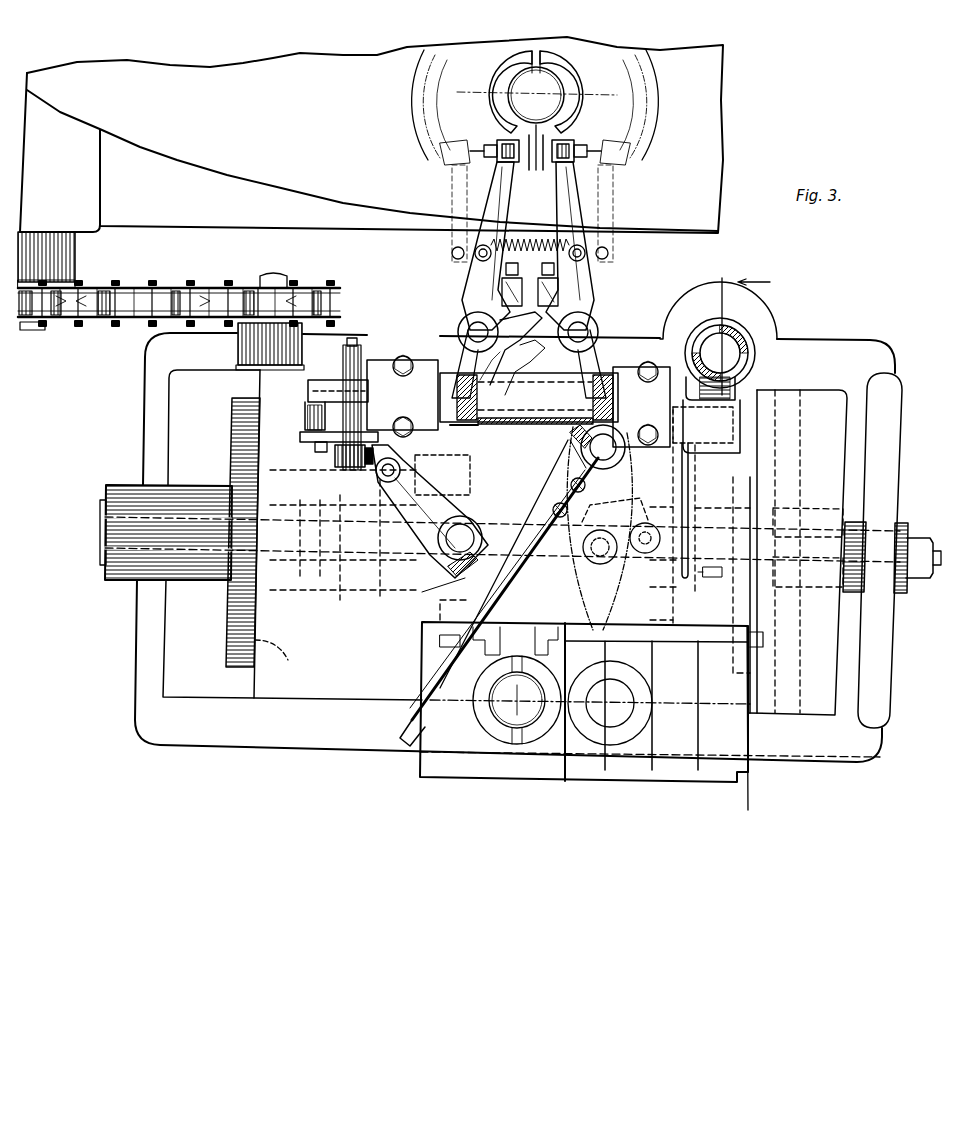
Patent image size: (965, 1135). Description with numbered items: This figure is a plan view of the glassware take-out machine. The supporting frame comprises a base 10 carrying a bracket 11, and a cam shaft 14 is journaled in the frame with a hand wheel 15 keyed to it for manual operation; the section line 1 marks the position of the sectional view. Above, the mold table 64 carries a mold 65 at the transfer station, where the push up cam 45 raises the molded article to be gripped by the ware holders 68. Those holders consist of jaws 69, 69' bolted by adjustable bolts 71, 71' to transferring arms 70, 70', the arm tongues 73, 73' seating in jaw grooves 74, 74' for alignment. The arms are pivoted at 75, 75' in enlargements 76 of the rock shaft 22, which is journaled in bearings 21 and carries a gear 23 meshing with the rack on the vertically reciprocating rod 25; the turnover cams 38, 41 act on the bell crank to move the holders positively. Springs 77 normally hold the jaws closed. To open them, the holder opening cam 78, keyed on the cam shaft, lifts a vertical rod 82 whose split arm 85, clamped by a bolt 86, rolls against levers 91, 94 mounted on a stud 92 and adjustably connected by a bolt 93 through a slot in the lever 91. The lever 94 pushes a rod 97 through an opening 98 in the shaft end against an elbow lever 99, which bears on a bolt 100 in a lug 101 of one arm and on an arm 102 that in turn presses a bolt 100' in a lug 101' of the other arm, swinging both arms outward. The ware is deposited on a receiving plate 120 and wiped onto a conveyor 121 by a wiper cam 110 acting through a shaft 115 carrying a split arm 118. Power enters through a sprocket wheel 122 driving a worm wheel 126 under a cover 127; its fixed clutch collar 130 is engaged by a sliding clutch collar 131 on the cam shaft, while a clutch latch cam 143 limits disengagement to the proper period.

The section line 1 is at (746, 542).
The base 10 is at (144, 350).
The bracket 11 is at (265, 387).
The cam shaft 14 is at (104, 518).
The hand wheel 15 is at (890, 498).
The bearings 21 is at (378, 358).
The rock shaft 22 is at (390, 356).
The gear 23 is at (740, 378).
The vertically reciprocating rod 25 is at (730, 345).
The turnover cam 38 is at (688, 618).
The turnover cam 41 is at (733, 604).
The push up cam 45 is at (548, 476).
The mold table 64 is at (722, 150).
The mold 65 is at (620, 50).
The ware holders 68 is at (530, 58).
The jaw 69 is at (504, 92).
The jaw 69' is at (577, 92).
The transferring arm 70 is at (469, 280).
The transferring arm 70' is at (604, 280).
The bolt 71 is at (458, 147).
The bolt 71' is at (618, 150).
The tongue 73 is at (497, 141).
The tongue 73' is at (575, 141).
The groove 74 is at (531, 173).
The groove 74' is at (541, 158).
The pivot 75 is at (451, 327).
The pivot 75' is at (603, 327).
The enlargement 76 is at (560, 420).
The spring 77 is at (588, 228).
The holder opening cam 78 is at (463, 470).
The vertical rod 82 is at (482, 530).
The split arm 85 is at (428, 500).
The bolt 86 is at (445, 580).
The lever 91 is at (305, 428).
The stud 92 is at (338, 465).
The bolt 93 is at (305, 440).
The lever 94 is at (318, 390).
The rod 97 is at (352, 365).
The opening 98 is at (475, 425).
The elbow lever 99 is at (515, 370).
The bolt 100 is at (465, 221).
The bolt 100' is at (598, 220).
The lug 101 is at (468, 291).
The lug 101' is at (598, 291).
The arm 102 is at (528, 345).
The wiper cam 110 is at (600, 612).
The shaft 115 is at (616, 450).
The split arm 118 is at (565, 450).
The receiving plate 120 is at (420, 770).
The conveyor 121 is at (722, 740).
The sprocket wheel 122 is at (288, 298).
The worm wheel 126 is at (280, 655).
The cover 127 is at (232, 418).
The fixed clutch collar 130 is at (308, 575).
The sliding clutch collar 131 is at (336, 578).
The clutch latch cam 143 is at (415, 470).